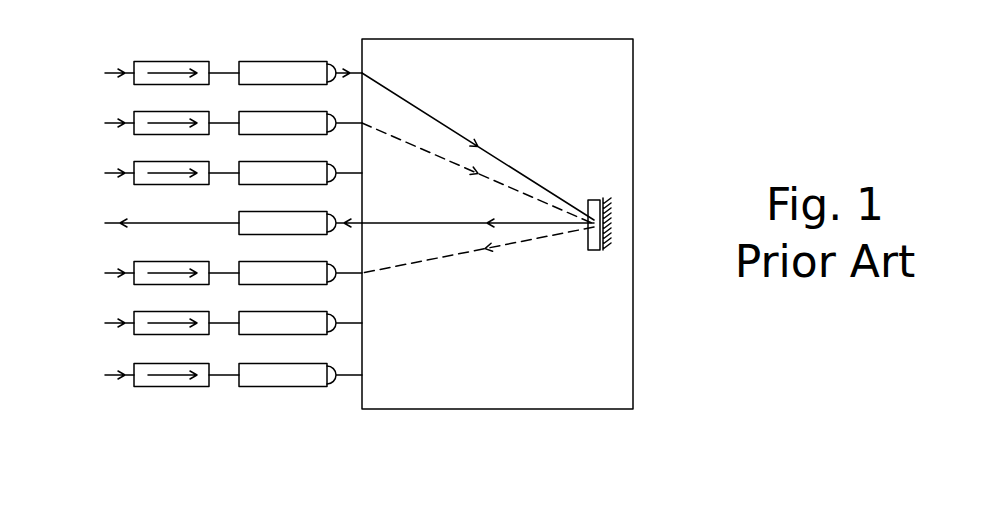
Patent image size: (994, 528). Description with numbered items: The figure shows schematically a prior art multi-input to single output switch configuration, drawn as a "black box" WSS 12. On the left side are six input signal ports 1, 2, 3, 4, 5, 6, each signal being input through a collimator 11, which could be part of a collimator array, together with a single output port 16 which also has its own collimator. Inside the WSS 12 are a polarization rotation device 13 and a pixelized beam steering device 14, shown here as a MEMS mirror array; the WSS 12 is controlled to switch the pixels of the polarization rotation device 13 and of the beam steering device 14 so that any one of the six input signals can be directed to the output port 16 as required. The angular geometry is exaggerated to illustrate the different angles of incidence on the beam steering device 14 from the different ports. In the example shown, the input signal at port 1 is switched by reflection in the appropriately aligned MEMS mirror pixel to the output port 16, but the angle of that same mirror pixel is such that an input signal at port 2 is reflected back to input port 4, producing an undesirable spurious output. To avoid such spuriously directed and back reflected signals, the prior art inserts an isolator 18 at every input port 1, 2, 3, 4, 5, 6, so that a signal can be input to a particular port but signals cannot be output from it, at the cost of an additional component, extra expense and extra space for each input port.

The input signal port 1 is at (107, 73).
The input signal port 2 is at (107, 123).
The input signal port 3 is at (107, 173).
The input signal port 4 is at (107, 273).
The input signal port 5 is at (107, 323).
The input signal port 6 is at (107, 375).
The output port 16 is at (152, 223).
The isolator 18 is at (170, 62).
The collimator 11 is at (266, 62).
The WSS 12 is at (534, 429).
The polarization rotation device 13 is at (597, 200).
The pixelized beam steering device 14 is at (607, 200).